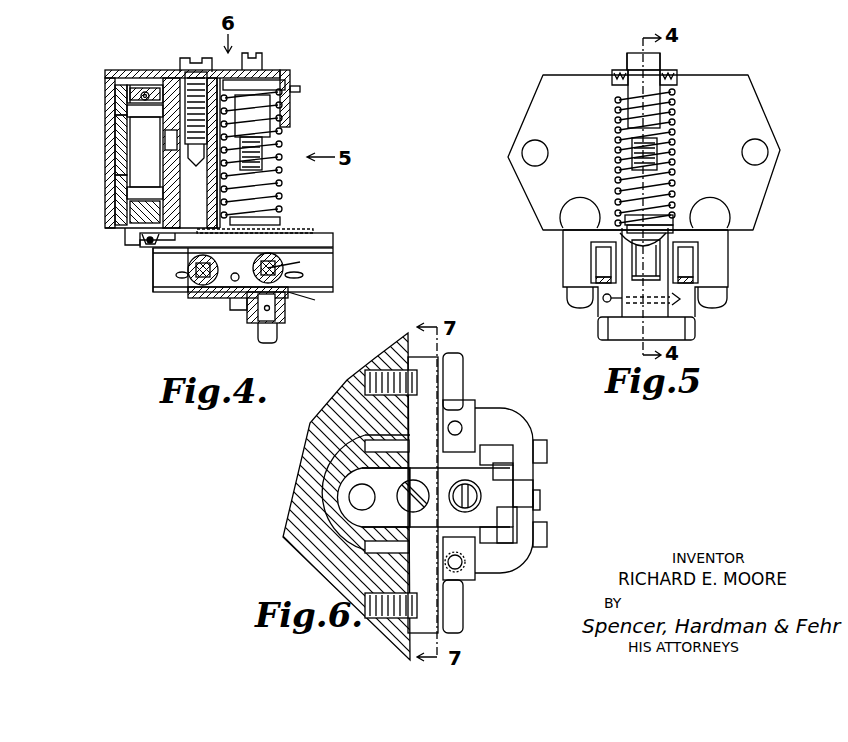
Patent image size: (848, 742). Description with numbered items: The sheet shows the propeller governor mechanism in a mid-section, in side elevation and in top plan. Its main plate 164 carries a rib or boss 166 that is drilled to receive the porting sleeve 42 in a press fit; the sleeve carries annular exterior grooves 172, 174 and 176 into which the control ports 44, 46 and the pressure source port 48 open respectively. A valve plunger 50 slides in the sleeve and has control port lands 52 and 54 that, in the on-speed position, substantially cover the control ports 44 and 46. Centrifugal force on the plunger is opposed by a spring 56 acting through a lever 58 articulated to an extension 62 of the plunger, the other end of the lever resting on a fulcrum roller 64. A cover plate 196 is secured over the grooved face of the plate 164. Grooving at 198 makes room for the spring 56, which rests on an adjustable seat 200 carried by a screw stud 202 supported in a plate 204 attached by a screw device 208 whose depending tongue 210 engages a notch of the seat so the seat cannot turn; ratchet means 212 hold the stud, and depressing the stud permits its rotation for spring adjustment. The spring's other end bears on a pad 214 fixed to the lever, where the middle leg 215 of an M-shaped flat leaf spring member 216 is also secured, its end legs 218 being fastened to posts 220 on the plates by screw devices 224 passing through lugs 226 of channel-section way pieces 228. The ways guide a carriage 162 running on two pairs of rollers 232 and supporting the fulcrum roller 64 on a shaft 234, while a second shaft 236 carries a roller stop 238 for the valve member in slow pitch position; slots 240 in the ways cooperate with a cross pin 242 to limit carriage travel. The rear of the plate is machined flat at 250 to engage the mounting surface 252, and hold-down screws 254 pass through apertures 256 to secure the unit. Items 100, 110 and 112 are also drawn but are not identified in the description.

In FIG. 4, the porting sleeve 42 is at (108, 224).
In FIG. 4, the control port 44 is at (128, 95).
In FIG. 4, the control port 46 is at (128, 192).
In FIG. 4, the pressure source port 48 is at (168, 140).
In FIG. 4, the valve plunger 50 is at (140, 163).
In FIG. 4, the control port land 52 is at (140, 113).
In FIG. 4, the control port land 54 is at (128, 210).
In FIG. 4, the spring 56 is at (282, 182).
In FIG. 5, the spring 56 is at (665, 148).
In FIG. 4, the lever 58 is at (300, 240).
In FIG. 5, the lever 58 is at (680, 232).
In FIG. 6, the lever 58 is at (542, 493).
In FIG. 4, the extension 62 is at (128, 240).
In FIG. 4, the fulcrum roller 64 is at (295, 292).
In FIG. 5, the fulcrum roller 64 is at (615, 226).
In FIG. 4, the nut 100 is at (148, 246).
In FIG. 4, the bore 110 is at (131, 86).
In FIG. 4, the orifice 112 is at (145, 93).
In FIG. 4, the carriage 162 is at (287, 320).
In FIG. 5, the carriage 162 is at (680, 312).
In FIG. 6, the plate 164 is at (418, 403).
In FIG. 6, the rib or boss 166 is at (335, 500).
In FIG. 4, the annular exterior groove 172 is at (121, 103).
In FIG. 4, the annular exterior groove 174 is at (120, 200).
In FIG. 4, the annular exterior groove 176 is at (120, 153).
In FIG. 5, the cover plate 196 is at (750, 100).
In FIG. 6, the cover plate 196 is at (440, 425).
In FIG. 4, the machining or grooving 198 is at (255, 145).
In FIG. 4, the adjustable seat 200 is at (270, 108).
In FIG. 5, the adjustable seat 200 is at (672, 128).
In FIG. 4, the screw stud 202 is at (258, 60).
In FIG. 5, the screw stud 202 is at (643, 55).
In FIG. 6, the screw stud 202 is at (482, 468).
In FIG. 4, the plate 204 is at (166, 70).
In FIG. 6, the plate 204 is at (350, 520).
In FIG. 4, the screw device 208 is at (200, 58).
In FIG. 5, the screw device 208 is at (626, 62).
In FIG. 6, the screw device 208 is at (392, 504).
In FIG. 4, the depending lug or tongue 210 is at (286, 85).
In FIG. 5, the depending lug or tongue 210 is at (660, 92).
In FIG. 4, the ratchet means 212 is at (290, 72).
In FIG. 5, the ratchet means 212 is at (612, 78).
In FIG. 4, the seat or pad 214 is at (262, 222).
In FIG. 5, the seat or pad 214 is at (645, 235).
In FIG. 6, the middle leg 215 is at (514, 495).
In FIG. 4, the flat leaf spring member 216 is at (305, 229).
In FIG. 5, the flat leaf spring member 216 is at (593, 248).
In FIG. 6, the flat leaf spring member 216 is at (550, 536).
In FIG. 6, the end legs 218 is at (480, 408).
In FIG. 5, the studs or posts 220 is at (563, 212).
In FIG. 6, the studs or posts 220 is at (470, 556).
In FIG. 4, the screw devices 224 is at (236, 312).
In FIG. 5, the screw devices 224 is at (570, 297).
In FIG. 5, the lugs 226 is at (722, 262).
In FIG. 4, the way pieces 228 is at (335, 270).
In FIG. 5, the way pieces 228 is at (608, 303).
In FIG. 6, the way pieces 228 is at (548, 448).
In FIG. 5, the rollers 232 is at (598, 270).
In FIG. 4, the shaft 234 is at (300, 262).
In FIG. 4, the second shaft 236 is at (190, 288).
In FIG. 4, the roller stop 238 is at (160, 280).
In FIG. 4, the slots 240 is at (303, 277).
In FIG. 4, the cross pin 242 is at (235, 282).
In FIG. 6, the machined flat 250 is at (410, 580).
In FIG. 6, the machine surface 252 is at (400, 344).
In FIG. 6, the screws 254 is at (462, 372).
In FIG. 5, the apertures 256 is at (532, 148).